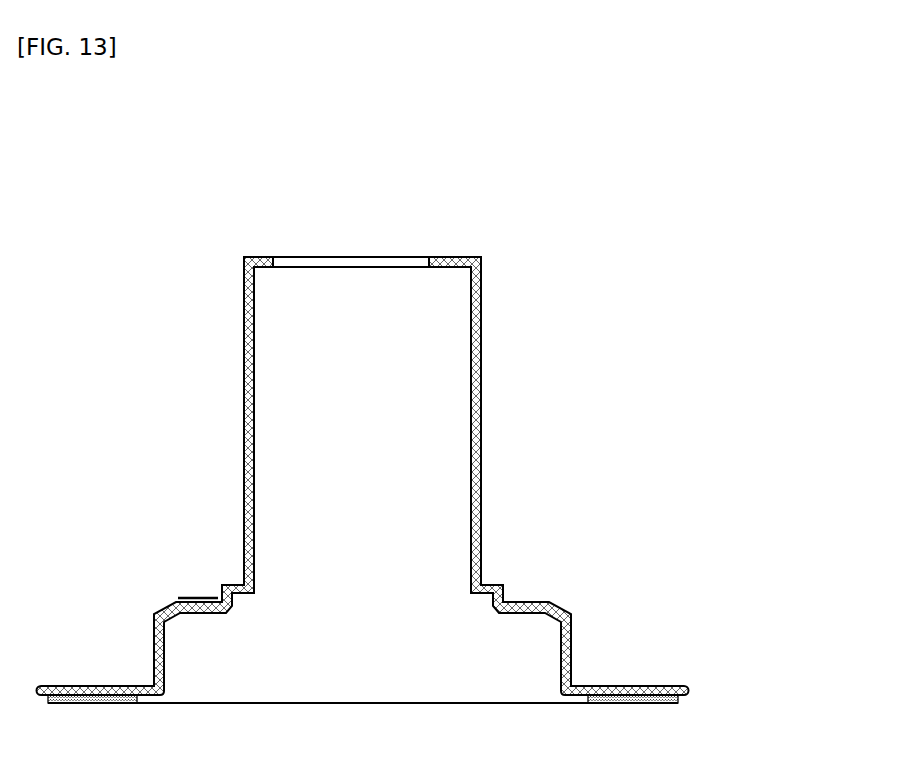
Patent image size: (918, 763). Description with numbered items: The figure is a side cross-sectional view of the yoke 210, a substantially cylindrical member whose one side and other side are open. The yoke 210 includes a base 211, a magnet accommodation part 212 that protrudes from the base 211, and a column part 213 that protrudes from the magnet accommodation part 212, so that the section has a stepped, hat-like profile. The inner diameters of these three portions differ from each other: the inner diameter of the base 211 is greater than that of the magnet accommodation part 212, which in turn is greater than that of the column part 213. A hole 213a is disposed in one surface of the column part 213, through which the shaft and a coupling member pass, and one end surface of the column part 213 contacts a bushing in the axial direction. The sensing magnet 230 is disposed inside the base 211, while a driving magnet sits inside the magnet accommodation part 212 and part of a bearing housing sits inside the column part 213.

The yoke 210 is at (408, 412).
The base 211 is at (672, 685).
The magnet accommodation part 212 is at (572, 632).
The column part 213 is at (408, 395).
The hole 213a is at (350, 265).
The sensing magnet 230 is at (636, 704).